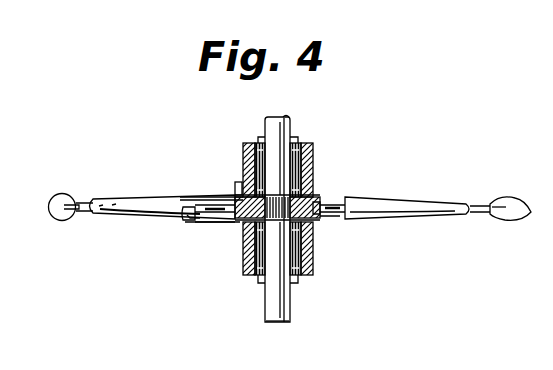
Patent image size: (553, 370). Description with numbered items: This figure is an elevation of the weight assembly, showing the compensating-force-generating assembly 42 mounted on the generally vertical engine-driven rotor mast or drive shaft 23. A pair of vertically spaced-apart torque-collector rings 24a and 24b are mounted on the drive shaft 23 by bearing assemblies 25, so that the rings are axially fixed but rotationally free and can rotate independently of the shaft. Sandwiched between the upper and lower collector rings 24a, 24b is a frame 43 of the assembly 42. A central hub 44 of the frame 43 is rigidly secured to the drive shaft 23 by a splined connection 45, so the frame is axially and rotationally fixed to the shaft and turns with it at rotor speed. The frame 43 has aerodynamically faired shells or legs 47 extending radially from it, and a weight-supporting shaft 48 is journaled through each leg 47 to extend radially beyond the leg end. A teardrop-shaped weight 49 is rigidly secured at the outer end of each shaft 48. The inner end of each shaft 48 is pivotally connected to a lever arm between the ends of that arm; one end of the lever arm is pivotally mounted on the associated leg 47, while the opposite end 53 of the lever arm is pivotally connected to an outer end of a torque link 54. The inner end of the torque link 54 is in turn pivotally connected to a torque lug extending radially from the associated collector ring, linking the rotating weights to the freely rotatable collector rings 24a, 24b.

The drive shaft 23 is at (292, 312).
The torque-collector ring 24a is at (313, 162).
The torque-collector ring 24b is at (313, 262).
The bearing assembly 25 is at (243, 165).
The compensating-force-generating assembly 42 is at (204, 138).
The frame 43 is at (373, 184).
The central hub 44 is at (232, 220).
The splined connection 45 is at (313, 180).
The leg 47 is at (153, 194).
The weight-supporting shaft 48 is at (85, 212).
The weight 49 is at (59, 220).
The opposite end of lever arm 53 is at (178, 199).
The torque link 54 is at (173, 220).